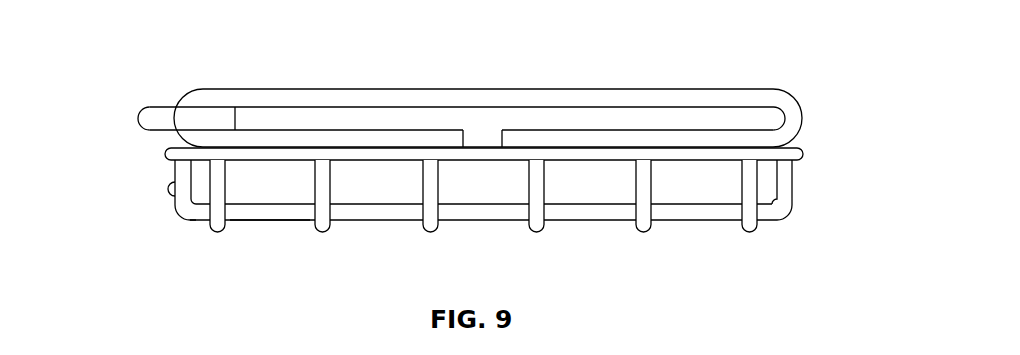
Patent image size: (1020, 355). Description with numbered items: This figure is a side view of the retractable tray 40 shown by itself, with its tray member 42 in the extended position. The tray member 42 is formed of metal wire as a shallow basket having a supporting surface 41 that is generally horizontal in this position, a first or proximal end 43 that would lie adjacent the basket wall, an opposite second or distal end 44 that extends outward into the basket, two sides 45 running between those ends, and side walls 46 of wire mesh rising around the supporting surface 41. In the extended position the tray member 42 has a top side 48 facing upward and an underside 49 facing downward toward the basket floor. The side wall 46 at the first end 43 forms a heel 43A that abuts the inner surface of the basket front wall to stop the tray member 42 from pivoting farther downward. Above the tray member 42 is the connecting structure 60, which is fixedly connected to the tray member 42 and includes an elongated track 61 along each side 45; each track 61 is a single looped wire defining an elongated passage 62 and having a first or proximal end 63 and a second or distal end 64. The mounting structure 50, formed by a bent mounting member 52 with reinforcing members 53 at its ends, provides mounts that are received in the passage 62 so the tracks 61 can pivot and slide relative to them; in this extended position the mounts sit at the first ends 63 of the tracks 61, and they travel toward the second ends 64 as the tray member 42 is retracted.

The retractable tray 40 is at (395, 88).
The supporting surface 41 is at (582, 212).
The tray member 42 is at (749, 188).
The first end 43 is at (163, 189).
The heel 43A is at (178, 209).
The second end 44 is at (793, 178).
The sides 45 is at (328, 187).
The side walls 46 is at (438, 181).
The top side 48 is at (346, 146).
The underside 49 is at (290, 223).
The mounting structure 50 is at (147, 131).
The mounting member 52 is at (138, 119).
The reinforcing members 53 is at (200, 120).
The connecting structure 60 is at (698, 87).
The track 61 is at (625, 88).
The passage 62 is at (558, 120).
The first end 63 is at (175, 92).
The second end 64 is at (787, 90).